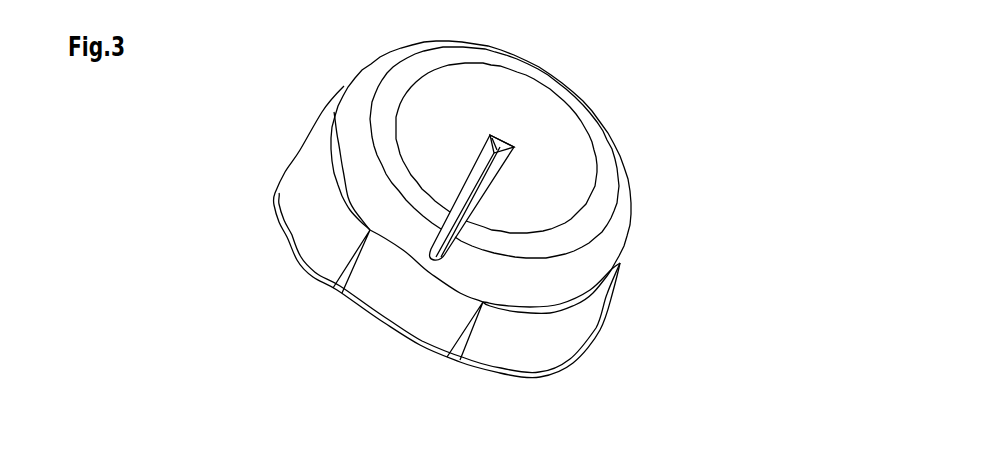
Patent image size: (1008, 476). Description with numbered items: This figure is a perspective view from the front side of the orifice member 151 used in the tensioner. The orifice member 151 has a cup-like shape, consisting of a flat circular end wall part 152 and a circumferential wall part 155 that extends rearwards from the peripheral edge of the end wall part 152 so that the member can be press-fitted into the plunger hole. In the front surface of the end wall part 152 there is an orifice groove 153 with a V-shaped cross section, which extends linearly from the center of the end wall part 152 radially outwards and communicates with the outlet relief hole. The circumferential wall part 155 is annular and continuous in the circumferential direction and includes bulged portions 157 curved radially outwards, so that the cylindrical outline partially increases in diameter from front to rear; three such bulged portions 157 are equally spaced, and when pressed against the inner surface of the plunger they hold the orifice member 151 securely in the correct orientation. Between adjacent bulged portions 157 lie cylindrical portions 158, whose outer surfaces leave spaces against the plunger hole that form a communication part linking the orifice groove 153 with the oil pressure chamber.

The orifice member 151 is at (616, 124).
The end wall part 152 is at (562, 193).
The orifice groove 153 is at (460, 196).
The circumferential wall part 155 is at (438, 443).
The bulged portions 157 is at (303, 248).
The cylindrical portions 158 is at (387, 320).